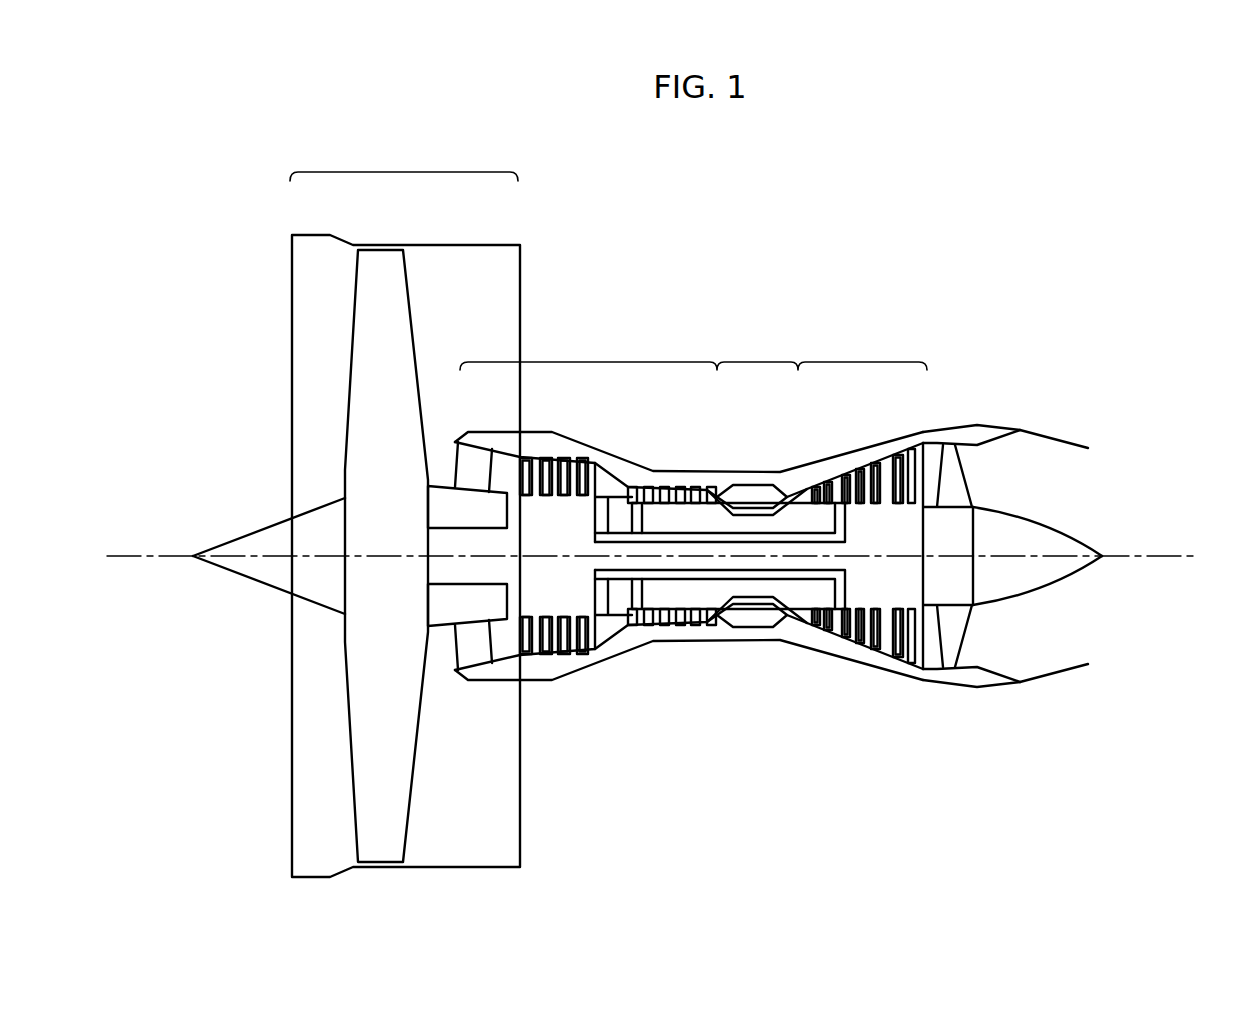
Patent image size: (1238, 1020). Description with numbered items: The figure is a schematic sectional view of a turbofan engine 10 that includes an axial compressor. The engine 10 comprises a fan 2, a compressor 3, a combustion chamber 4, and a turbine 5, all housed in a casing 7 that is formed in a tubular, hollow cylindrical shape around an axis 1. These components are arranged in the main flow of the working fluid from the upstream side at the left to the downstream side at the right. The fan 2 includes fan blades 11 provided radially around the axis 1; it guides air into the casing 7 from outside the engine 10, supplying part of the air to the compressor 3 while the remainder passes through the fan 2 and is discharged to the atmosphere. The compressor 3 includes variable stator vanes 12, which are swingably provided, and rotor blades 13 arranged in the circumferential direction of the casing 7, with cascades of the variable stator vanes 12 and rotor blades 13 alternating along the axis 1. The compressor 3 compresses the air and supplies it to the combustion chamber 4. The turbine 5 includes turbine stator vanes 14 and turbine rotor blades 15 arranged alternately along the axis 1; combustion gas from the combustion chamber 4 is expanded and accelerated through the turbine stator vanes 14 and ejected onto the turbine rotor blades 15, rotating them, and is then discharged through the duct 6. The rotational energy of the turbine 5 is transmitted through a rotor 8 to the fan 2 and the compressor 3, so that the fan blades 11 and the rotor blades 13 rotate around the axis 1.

The axis 1 is at (151, 556).
The fan 2 is at (404, 172).
The compressor 3 is at (578, 362).
The combustion chamber 4 is at (757, 362).
The turbine 5 is at (840, 362).
The duct 6 is at (1052, 432).
The casing 7 is at (553, 432).
The rotor 8 is at (582, 535).
The engine 10 is at (652, 494).
The fan blades 11 is at (381, 280).
The variable stator vanes 12 is at (527, 648).
The rotor blades 13 is at (547, 648).
The turbine stator vanes 14 is at (898, 640).
The turbine rotor blades 15 is at (915, 650).